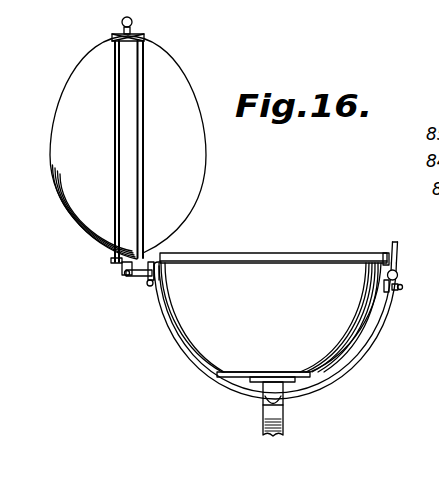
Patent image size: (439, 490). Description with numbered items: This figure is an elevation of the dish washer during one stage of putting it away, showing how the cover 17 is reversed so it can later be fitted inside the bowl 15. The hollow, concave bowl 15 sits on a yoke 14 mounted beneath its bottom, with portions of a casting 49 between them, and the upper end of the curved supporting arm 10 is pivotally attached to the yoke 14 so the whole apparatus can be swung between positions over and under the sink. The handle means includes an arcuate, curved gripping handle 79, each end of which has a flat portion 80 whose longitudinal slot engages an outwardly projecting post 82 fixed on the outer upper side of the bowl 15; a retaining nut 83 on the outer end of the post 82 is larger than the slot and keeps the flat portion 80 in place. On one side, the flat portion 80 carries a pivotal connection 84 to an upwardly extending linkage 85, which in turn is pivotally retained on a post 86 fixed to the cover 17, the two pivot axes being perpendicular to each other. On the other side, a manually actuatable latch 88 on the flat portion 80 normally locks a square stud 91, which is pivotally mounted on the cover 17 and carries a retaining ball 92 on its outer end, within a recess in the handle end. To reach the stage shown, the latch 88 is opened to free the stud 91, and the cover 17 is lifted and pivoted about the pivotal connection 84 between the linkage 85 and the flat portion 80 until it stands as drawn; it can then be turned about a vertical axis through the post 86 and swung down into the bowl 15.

The curved supporting arm 10 is at (284, 422).
The yoke 14 is at (276, 390).
The hollow concave bowl 15 is at (272, 283).
The cover 17 is at (80, 77).
The casting 49 is at (240, 377).
The arcuate curved gripping handle 79 is at (355, 366).
The flat portion 80 is at (397, 257).
The outwardly projecting post 82 is at (389, 292).
The retaining nut 83 is at (402, 288).
The pivotal connection 84 is at (152, 263).
The linkage 85 is at (138, 277).
The post 86 is at (124, 272).
The manually actuatable latch 88 is at (391, 251).
The square stud 91 is at (124, 31).
The retaining ball 92 is at (132, 21).